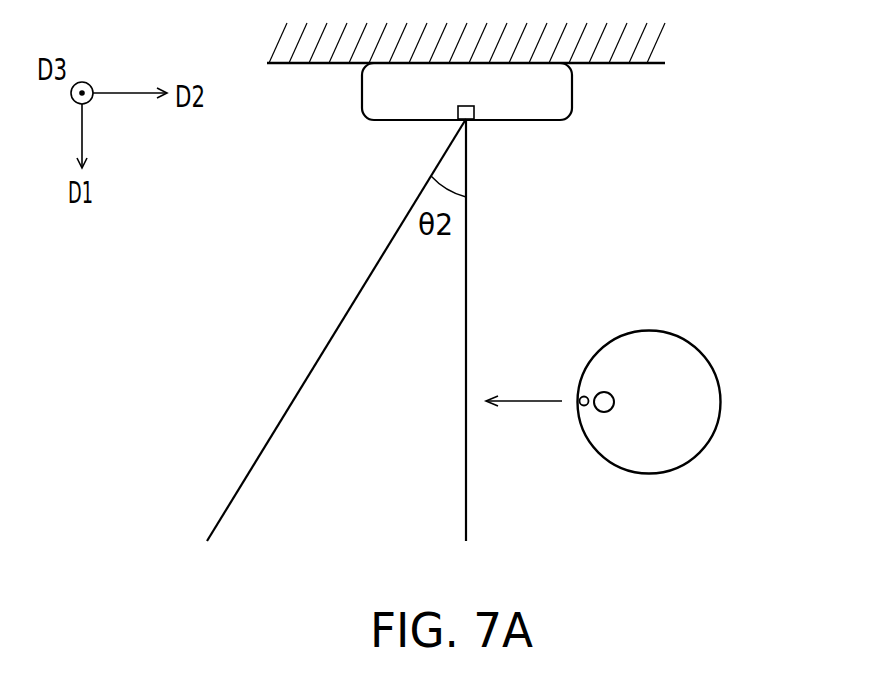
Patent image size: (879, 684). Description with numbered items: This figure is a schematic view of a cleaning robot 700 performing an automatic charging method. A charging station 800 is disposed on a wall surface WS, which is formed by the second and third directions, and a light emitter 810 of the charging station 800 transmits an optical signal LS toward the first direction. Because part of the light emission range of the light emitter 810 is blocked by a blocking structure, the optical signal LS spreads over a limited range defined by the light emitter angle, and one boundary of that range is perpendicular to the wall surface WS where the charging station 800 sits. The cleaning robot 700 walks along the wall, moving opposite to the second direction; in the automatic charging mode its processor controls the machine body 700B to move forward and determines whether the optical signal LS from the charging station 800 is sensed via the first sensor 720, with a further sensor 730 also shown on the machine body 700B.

The charging station 800 is at (572, 89).
The light emitter 810 is at (474, 110).
The cleaning robot 700 is at (715, 371).
The machine body 700B is at (693, 419).
The first sensor 720 is at (605, 391).
The ball marking 730 is at (584, 396).
The wall surface WS is at (301, 66).
The optical signal LS is at (378, 294).